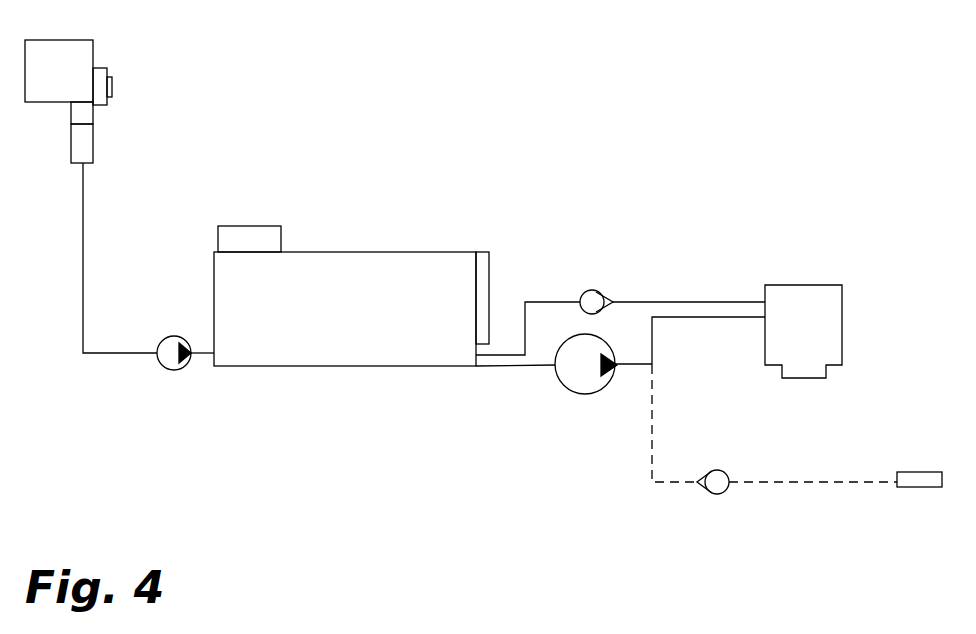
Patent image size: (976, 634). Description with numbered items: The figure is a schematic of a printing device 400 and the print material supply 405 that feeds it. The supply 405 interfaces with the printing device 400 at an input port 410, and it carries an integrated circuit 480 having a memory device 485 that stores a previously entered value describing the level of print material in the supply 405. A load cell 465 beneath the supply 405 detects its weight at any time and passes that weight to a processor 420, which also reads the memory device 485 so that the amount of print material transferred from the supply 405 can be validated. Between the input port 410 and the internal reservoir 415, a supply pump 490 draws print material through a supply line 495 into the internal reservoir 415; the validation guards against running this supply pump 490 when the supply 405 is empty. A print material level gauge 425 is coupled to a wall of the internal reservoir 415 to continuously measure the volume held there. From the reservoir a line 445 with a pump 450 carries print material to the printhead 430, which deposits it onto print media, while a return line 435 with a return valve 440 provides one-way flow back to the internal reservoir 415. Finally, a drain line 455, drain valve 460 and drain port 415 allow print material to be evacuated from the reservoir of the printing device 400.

The printing device 400 is at (806, 44).
The supply 405 is at (59, 71).
The input port 410 is at (88, 148).
The internal reservoir 415 is at (920, 483).
The processor 420 is at (241, 240).
The print material level gauge 425 is at (486, 279).
The printhead 430 is at (800, 307).
The return line 435 is at (684, 300).
The return valve 440 is at (592, 290).
The return line 445 is at (657, 318).
The pump 450 is at (582, 370).
The drain line 455 is at (650, 435).
The drain valve 460 is at (715, 483).
The load cell 465 is at (86, 113).
The integrated circuit 480 is at (98, 78).
The memory device 485 is at (112, 85).
The supply pump 490 is at (170, 358).
The supply line 495 is at (106, 354).